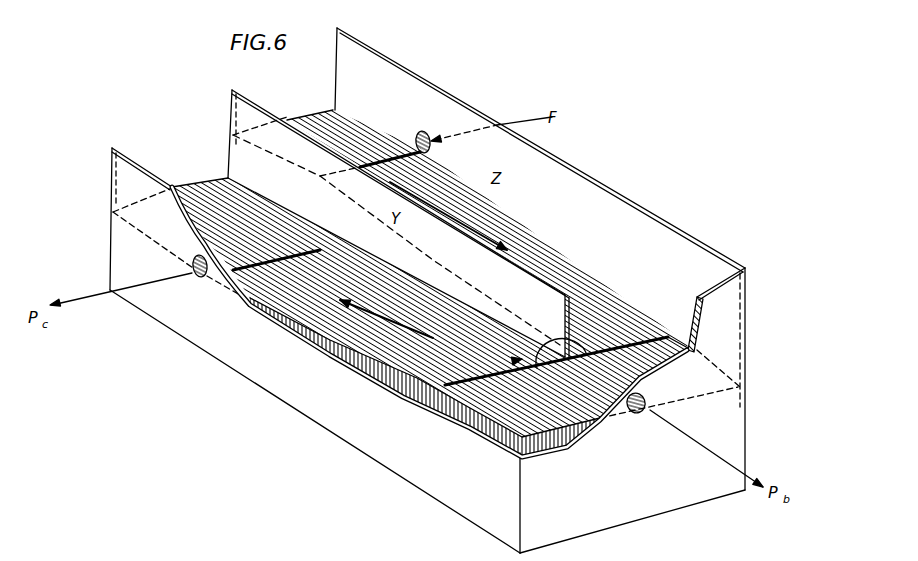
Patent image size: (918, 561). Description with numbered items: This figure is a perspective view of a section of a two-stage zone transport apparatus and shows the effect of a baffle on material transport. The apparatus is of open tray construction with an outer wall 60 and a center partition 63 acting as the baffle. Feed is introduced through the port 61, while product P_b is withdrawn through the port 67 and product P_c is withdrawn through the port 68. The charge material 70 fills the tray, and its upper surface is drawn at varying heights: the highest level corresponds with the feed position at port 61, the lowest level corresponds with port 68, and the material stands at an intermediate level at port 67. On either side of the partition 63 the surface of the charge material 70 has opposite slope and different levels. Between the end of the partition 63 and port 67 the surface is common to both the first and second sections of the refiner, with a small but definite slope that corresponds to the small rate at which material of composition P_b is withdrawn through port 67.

The outer wall 60 is at (640, 213).
The feed port 61 is at (433, 138).
The center partition 63 is at (525, 295).
The product port 67 is at (646, 406).
The product port 68 is at (203, 275).
The charge material 70 is at (618, 312).